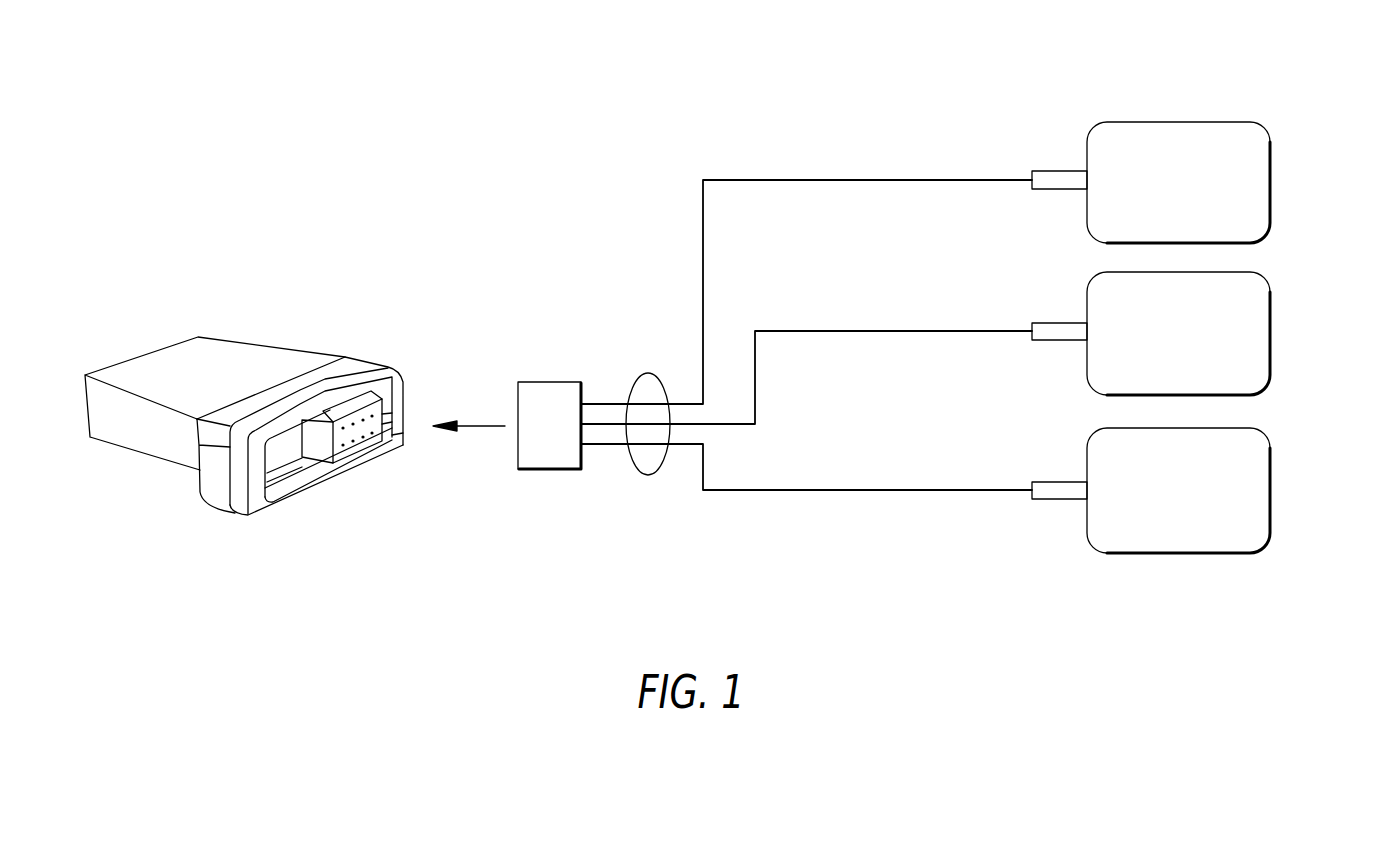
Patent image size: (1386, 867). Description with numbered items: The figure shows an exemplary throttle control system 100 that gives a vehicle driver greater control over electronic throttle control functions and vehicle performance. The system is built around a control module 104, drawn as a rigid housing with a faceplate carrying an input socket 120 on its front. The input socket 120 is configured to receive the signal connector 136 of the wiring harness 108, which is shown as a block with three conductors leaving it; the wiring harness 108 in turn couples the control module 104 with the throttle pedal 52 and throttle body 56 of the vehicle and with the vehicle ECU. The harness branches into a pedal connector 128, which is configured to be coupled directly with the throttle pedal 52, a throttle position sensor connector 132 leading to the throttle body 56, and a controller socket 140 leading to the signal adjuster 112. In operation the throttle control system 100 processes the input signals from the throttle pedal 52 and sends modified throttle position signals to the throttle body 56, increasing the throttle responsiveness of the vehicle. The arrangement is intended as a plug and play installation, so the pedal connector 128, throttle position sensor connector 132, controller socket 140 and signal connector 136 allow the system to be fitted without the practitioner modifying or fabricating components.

The throttle control system 100 is at (592, 122).
The control module 104 is at (177, 440).
The input socket 120 is at (355, 447).
The signal connector 136 is at (548, 468).
The wiring harness 108 is at (648, 475).
The throttle pedal 52 is at (1188, 120).
The pedal connector 128 is at (1052, 171).
The throttle body 56 is at (1270, 332).
The throttle position sensor connector 132 is at (1060, 323).
The signal adjuster 112 is at (1270, 490).
The controller socket 140 is at (1070, 499).